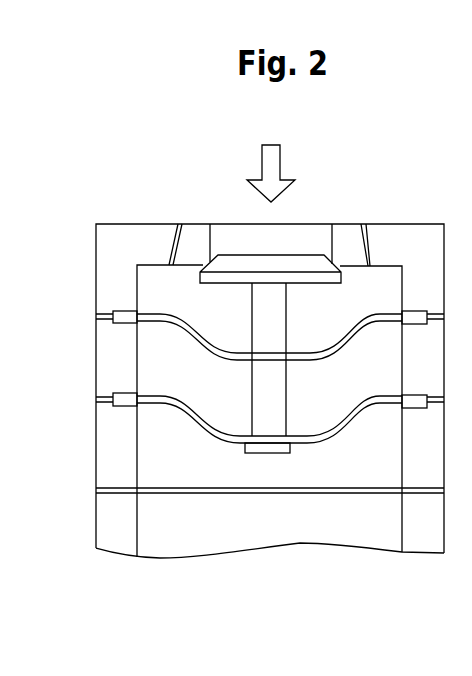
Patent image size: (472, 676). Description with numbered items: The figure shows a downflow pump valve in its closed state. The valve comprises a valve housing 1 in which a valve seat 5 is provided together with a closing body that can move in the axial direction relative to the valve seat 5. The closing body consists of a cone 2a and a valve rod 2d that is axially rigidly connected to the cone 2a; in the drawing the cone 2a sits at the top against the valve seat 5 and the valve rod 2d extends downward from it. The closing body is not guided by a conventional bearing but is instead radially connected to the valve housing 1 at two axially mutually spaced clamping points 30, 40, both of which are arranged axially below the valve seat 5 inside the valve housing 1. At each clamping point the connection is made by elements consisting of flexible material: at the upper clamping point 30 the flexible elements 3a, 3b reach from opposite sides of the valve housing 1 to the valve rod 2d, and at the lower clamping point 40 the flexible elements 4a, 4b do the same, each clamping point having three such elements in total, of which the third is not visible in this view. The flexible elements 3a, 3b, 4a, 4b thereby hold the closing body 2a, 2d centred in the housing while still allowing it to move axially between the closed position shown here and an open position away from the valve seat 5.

The valve housing 1 is at (113, 255).
The valve seat 5 is at (197, 240).
The cone 2a is at (312, 267).
The valve rod 2d is at (268, 322).
The clamping point 30 is at (268, 358).
The flexible element 3a is at (393, 316).
The flexible element 3b is at (165, 326).
The clamping point 40 is at (253, 447).
The flexible element 4a is at (318, 432).
The flexible element 4b is at (165, 405).